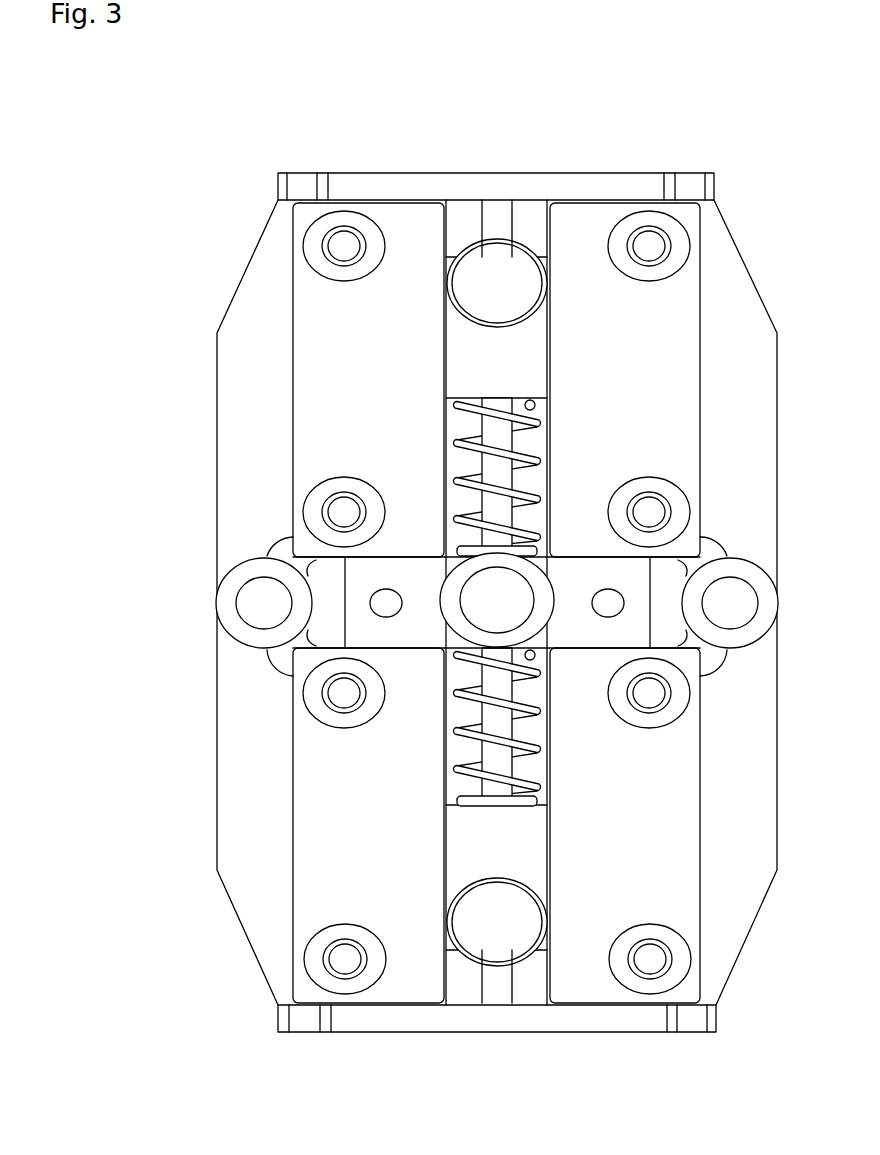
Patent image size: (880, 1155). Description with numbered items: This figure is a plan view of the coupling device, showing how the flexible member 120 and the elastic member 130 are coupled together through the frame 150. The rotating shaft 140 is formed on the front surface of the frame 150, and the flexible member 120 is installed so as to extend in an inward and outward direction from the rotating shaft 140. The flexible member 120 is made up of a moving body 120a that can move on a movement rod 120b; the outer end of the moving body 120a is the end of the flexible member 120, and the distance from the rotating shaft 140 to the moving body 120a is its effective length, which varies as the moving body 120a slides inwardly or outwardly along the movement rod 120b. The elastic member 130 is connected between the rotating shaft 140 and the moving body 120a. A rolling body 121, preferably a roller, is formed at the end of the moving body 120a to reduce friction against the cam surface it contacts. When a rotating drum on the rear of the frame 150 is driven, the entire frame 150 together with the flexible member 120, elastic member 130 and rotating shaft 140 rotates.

The flexible member 120 is at (575, 530).
The moving body 120a is at (533, 342).
The movement rod 120b is at (500, 207).
The rolling body 121 is at (460, 247).
The elastic member 130 is at (447, 450).
The rotating shaft 140 is at (458, 628).
The frame 150 is at (230, 369).